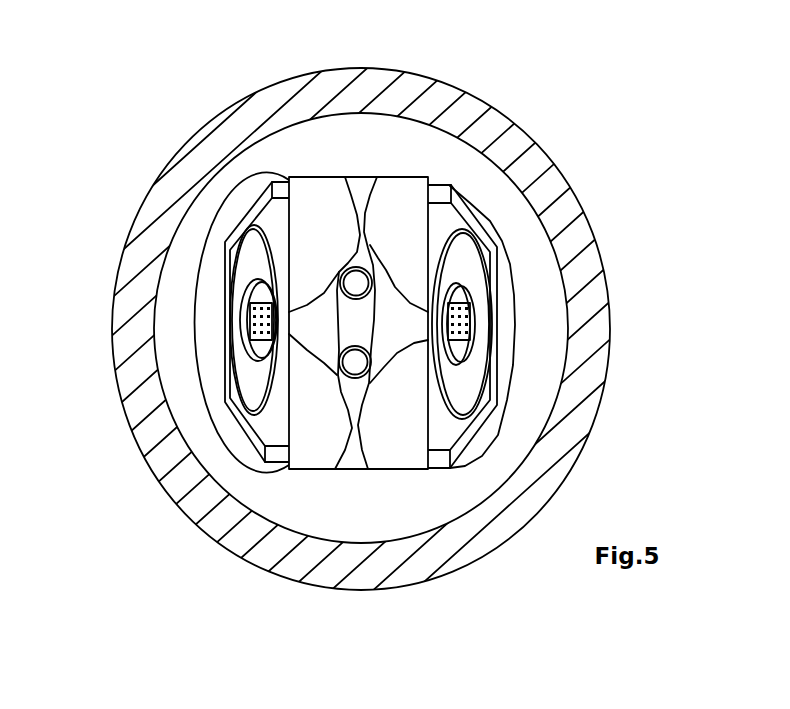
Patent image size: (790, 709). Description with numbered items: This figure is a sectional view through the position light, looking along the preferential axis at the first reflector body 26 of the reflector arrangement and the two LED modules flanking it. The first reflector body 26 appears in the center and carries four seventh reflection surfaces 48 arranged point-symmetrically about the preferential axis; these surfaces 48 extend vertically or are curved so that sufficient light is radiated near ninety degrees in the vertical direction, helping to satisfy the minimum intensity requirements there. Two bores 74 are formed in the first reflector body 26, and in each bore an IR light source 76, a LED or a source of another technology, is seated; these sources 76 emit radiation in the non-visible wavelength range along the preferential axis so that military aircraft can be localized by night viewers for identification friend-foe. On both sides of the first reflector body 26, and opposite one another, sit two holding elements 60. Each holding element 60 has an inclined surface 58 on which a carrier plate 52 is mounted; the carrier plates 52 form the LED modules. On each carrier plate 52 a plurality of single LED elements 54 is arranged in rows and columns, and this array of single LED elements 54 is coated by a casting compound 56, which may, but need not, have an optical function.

The first reflector body 26 is at (396, 243).
The seventh reflection surfaces 48 is at (361, 359).
The carrier plate 52 is at (430, 281).
The single LED elements 54 is at (458, 283).
The casting compound 56 is at (450, 342).
The inclined surface 58 is at (365, 404).
The holding element 60 is at (360, 377).
The bores 74 is at (208, 281).
The IR light source 76 is at (213, 219).